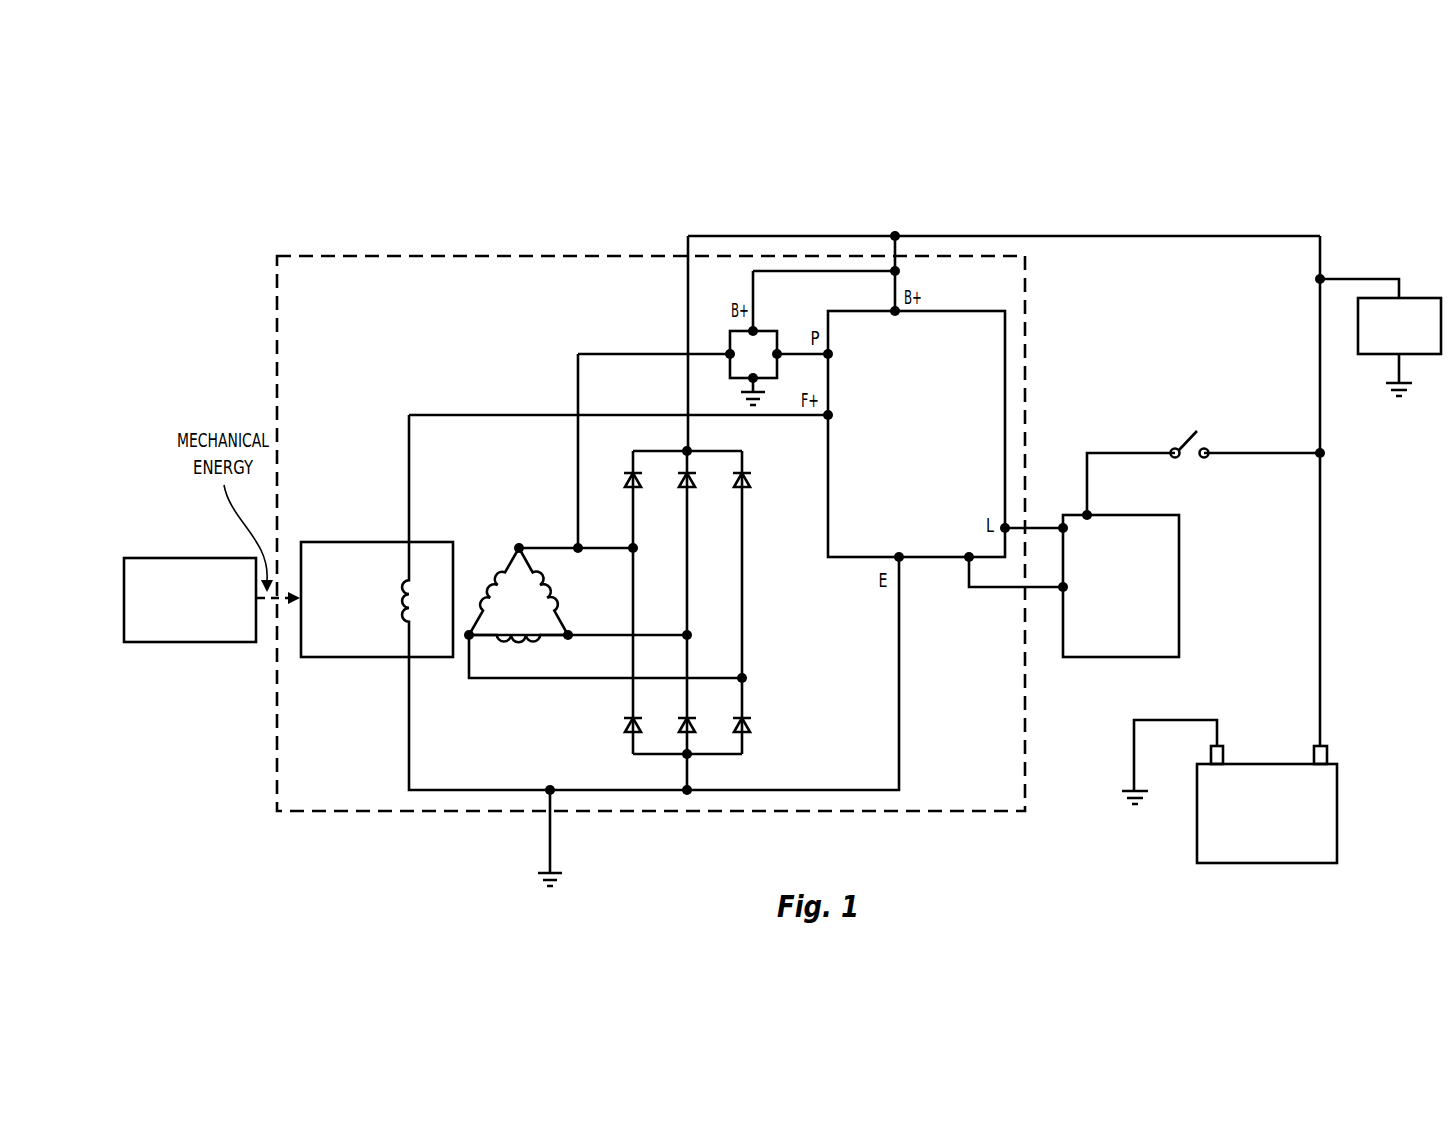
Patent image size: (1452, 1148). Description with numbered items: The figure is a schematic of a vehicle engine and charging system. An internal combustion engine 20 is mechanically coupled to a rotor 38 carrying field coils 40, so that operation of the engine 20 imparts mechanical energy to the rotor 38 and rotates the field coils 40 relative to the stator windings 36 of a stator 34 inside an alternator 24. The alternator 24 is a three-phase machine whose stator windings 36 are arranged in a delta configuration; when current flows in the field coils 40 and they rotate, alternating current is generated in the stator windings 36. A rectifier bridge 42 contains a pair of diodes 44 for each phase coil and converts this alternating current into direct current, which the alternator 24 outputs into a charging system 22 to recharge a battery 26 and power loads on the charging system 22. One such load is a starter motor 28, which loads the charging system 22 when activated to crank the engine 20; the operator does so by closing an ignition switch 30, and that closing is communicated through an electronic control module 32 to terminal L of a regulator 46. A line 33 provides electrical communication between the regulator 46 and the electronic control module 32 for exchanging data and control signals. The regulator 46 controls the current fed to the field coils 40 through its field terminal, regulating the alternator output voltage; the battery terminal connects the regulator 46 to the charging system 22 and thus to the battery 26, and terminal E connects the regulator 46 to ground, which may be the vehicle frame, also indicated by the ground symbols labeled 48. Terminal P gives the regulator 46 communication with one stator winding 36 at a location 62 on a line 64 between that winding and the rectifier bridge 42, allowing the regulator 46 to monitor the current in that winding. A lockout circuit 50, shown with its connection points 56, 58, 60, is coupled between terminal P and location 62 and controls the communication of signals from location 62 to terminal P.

The internal combustion engine 20 is at (162, 557).
The charging system 22 is at (970, 173).
The alternator 24 is at (938, 813).
The battery 26 is at (1338, 808).
The starter motor 28 is at (1424, 297).
The ignition switch 30 is at (1188, 460).
The electronic control module 32 is at (1180, 600).
The line 33 is at (992, 595).
The stator 34 is at (538, 587).
The stator windings 36 is at (555, 582).
The rotor 38 is at (377, 574).
The field coils 40 is at (395, 618).
The rectifier bridge 42 is at (692, 602).
The diodes 44 is at (697, 480).
The regulator 46 is at (1005, 357).
The ground 48 is at (548, 871).
The lockout circuit 50 is at (727, 299).
The first terminal 56 is at (750, 329).
The second terminal 58 is at (728, 352).
The third terminal 60 is at (779, 351).
The location 62 is at (575, 545).
The line 64 is at (610, 546).